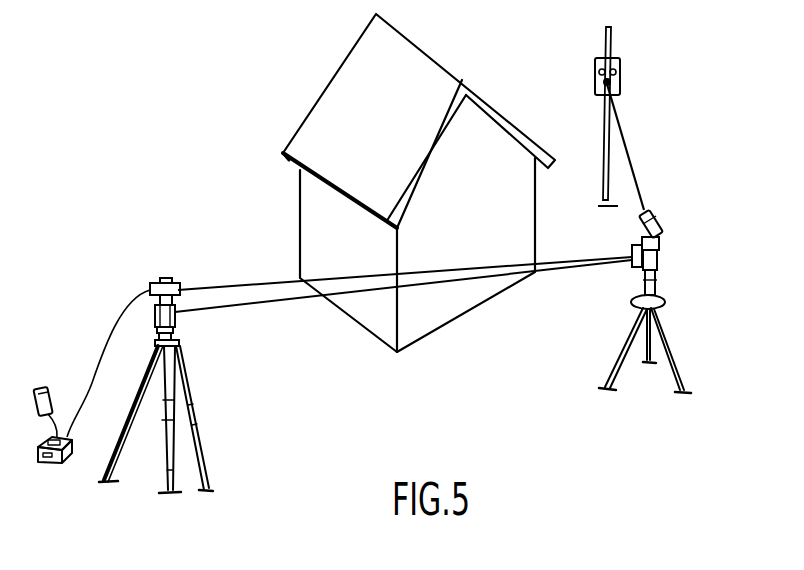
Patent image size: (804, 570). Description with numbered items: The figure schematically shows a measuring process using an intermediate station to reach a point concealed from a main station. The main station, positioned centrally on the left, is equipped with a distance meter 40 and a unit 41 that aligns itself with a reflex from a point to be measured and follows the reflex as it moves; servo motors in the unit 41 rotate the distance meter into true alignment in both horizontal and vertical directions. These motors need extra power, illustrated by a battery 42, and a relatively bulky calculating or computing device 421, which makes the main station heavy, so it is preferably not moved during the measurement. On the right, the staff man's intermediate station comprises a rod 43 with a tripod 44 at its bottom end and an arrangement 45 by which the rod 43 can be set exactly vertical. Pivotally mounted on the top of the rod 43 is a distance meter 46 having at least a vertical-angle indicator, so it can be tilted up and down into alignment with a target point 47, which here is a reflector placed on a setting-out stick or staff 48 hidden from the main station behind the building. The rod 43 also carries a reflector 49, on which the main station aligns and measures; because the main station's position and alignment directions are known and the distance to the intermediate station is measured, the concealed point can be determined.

The distance meter 40 is at (186, 284).
The unit 41 is at (177, 320).
The battery 42 is at (43, 388).
The calculating or computing device 421 is at (65, 462).
The rod 43 is at (660, 242).
The tripod 44 is at (670, 350).
The arrangement 45 is at (665, 300).
The distance meter 46 is at (660, 220).
The target point 47 is at (621, 66).
The setting-out stick or staff 48 is at (602, 125).
The reflector 49 is at (632, 262).